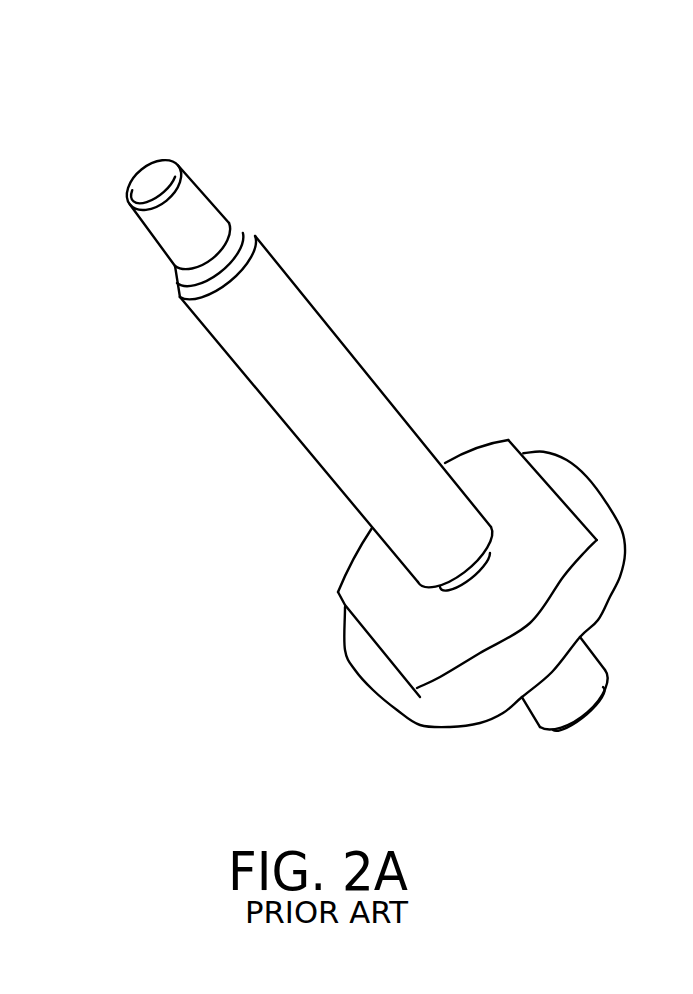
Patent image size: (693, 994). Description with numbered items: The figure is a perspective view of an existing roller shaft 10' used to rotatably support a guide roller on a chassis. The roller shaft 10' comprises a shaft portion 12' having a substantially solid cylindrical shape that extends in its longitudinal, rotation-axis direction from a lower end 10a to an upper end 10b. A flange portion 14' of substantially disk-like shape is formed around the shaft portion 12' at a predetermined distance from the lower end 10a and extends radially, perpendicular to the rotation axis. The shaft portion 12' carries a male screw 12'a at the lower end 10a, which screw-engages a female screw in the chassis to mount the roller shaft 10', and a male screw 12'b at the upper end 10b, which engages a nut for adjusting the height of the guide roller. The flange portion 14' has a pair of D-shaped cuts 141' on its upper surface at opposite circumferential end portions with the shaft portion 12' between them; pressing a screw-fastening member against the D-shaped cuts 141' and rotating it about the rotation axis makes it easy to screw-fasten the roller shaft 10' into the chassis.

The roller shaft 10' is at (365, 455).
The lower end 10a is at (593, 710).
The upper end 10b is at (142, 186).
The shaft portion 12' is at (339, 423).
The male screw 12'a is at (553, 706).
The male screw 12'b is at (228, 231).
The flange portion 14' is at (417, 560).
The D-shaped cuts 141' is at (403, 531).